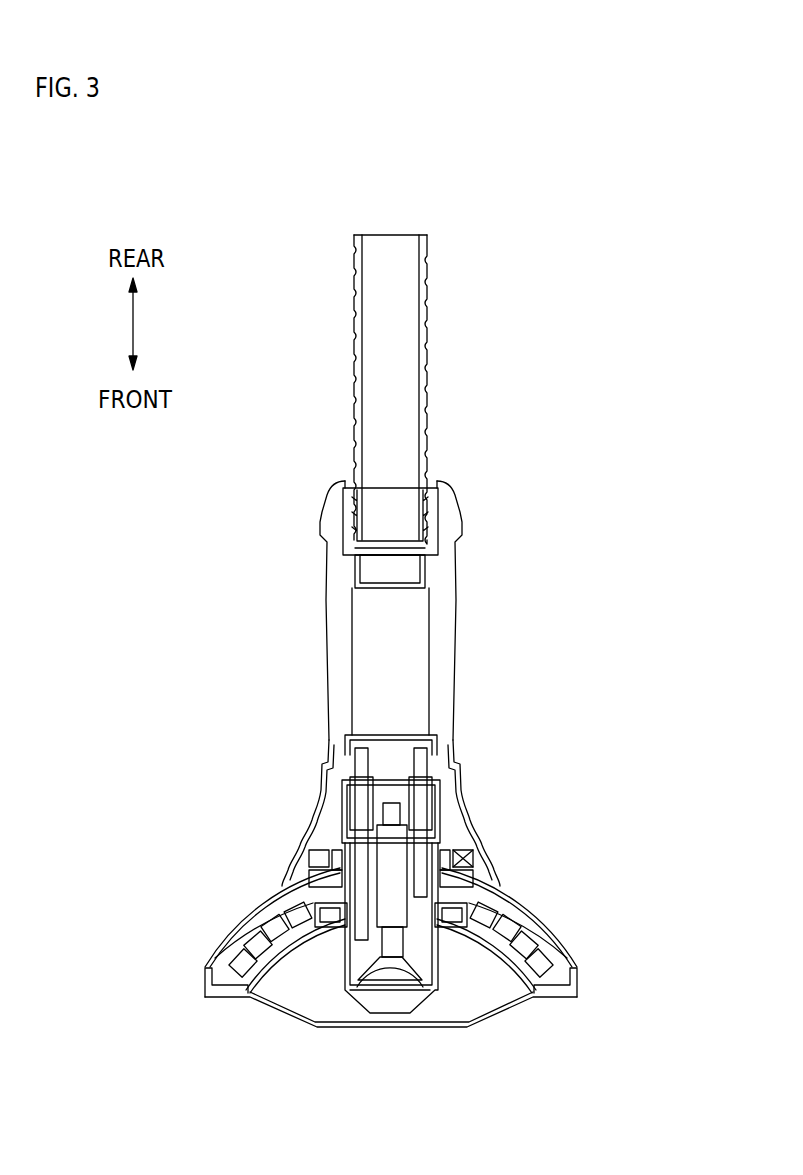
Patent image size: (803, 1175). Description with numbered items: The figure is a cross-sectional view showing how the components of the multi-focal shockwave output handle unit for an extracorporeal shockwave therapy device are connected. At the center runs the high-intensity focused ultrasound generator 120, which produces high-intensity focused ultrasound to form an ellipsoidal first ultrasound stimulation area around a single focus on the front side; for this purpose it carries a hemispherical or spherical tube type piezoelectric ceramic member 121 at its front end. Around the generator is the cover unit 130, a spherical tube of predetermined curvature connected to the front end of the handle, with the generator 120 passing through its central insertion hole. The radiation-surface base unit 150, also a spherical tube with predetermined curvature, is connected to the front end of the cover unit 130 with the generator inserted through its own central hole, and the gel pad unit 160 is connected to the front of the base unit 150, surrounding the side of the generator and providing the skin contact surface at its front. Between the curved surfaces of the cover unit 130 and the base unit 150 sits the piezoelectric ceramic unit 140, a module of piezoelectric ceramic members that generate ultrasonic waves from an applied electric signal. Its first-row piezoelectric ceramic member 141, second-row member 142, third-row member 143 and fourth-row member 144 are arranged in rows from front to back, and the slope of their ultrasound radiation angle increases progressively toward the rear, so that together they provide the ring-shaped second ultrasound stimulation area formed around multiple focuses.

The high-intensity focused ultrasound generator 120 is at (440, 832).
The piezoelectric ceramic member 121 is at (423, 1023).
The cover unit 130 is at (570, 948).
The piezoelectric ceramic unit 140 is at (358, 897).
The first-row piezoelectric ceramic member 141 is at (220, 960).
The second-row piezoelectric ceramic member 142 is at (247, 943).
The third-row piezoelectric ceramic member 143 is at (257, 925).
The fourth-row piezoelectric ceramic member 144 is at (283, 912).
The radiation-surface base unit 150 is at (577, 982).
The gel pad unit 160 is at (500, 1013).